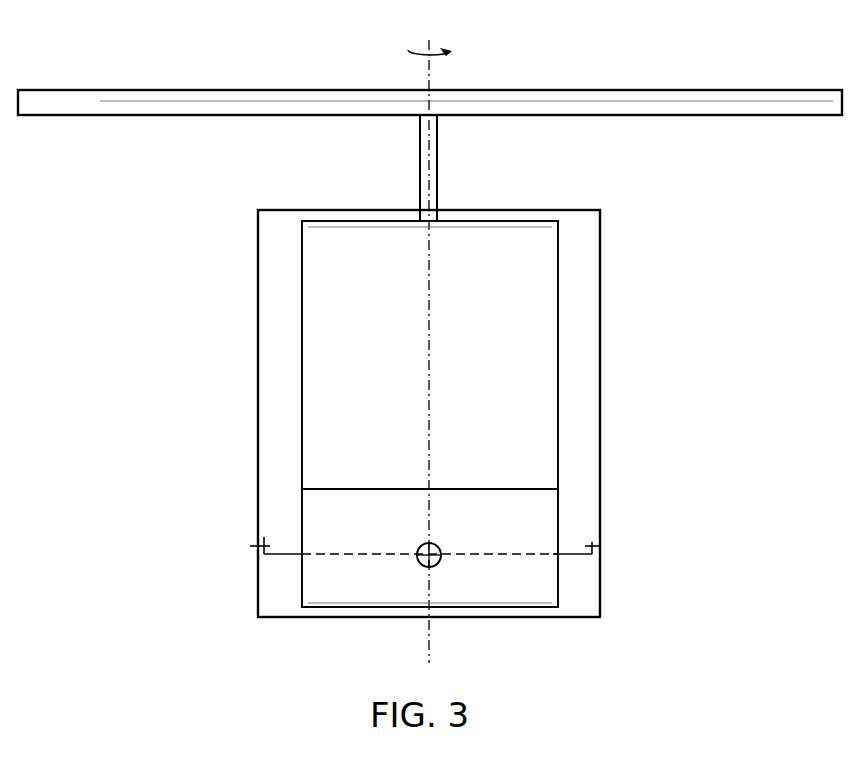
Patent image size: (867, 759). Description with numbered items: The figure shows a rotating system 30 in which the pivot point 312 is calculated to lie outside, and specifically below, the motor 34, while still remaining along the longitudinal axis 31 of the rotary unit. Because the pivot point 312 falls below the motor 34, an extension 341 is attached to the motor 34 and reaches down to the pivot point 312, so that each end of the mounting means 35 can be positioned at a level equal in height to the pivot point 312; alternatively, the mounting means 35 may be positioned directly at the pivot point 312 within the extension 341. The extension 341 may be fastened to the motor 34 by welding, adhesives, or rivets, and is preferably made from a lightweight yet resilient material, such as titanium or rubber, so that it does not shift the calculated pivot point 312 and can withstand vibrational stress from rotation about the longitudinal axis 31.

The rotating system 30 is at (70, 348).
The longitudinal axis 31 is at (430, 341).
The motor 34 is at (558, 407).
The extension 341 is at (300, 502).
The pivot point 312 is at (436, 543).
The mounting means 35 is at (600, 547).